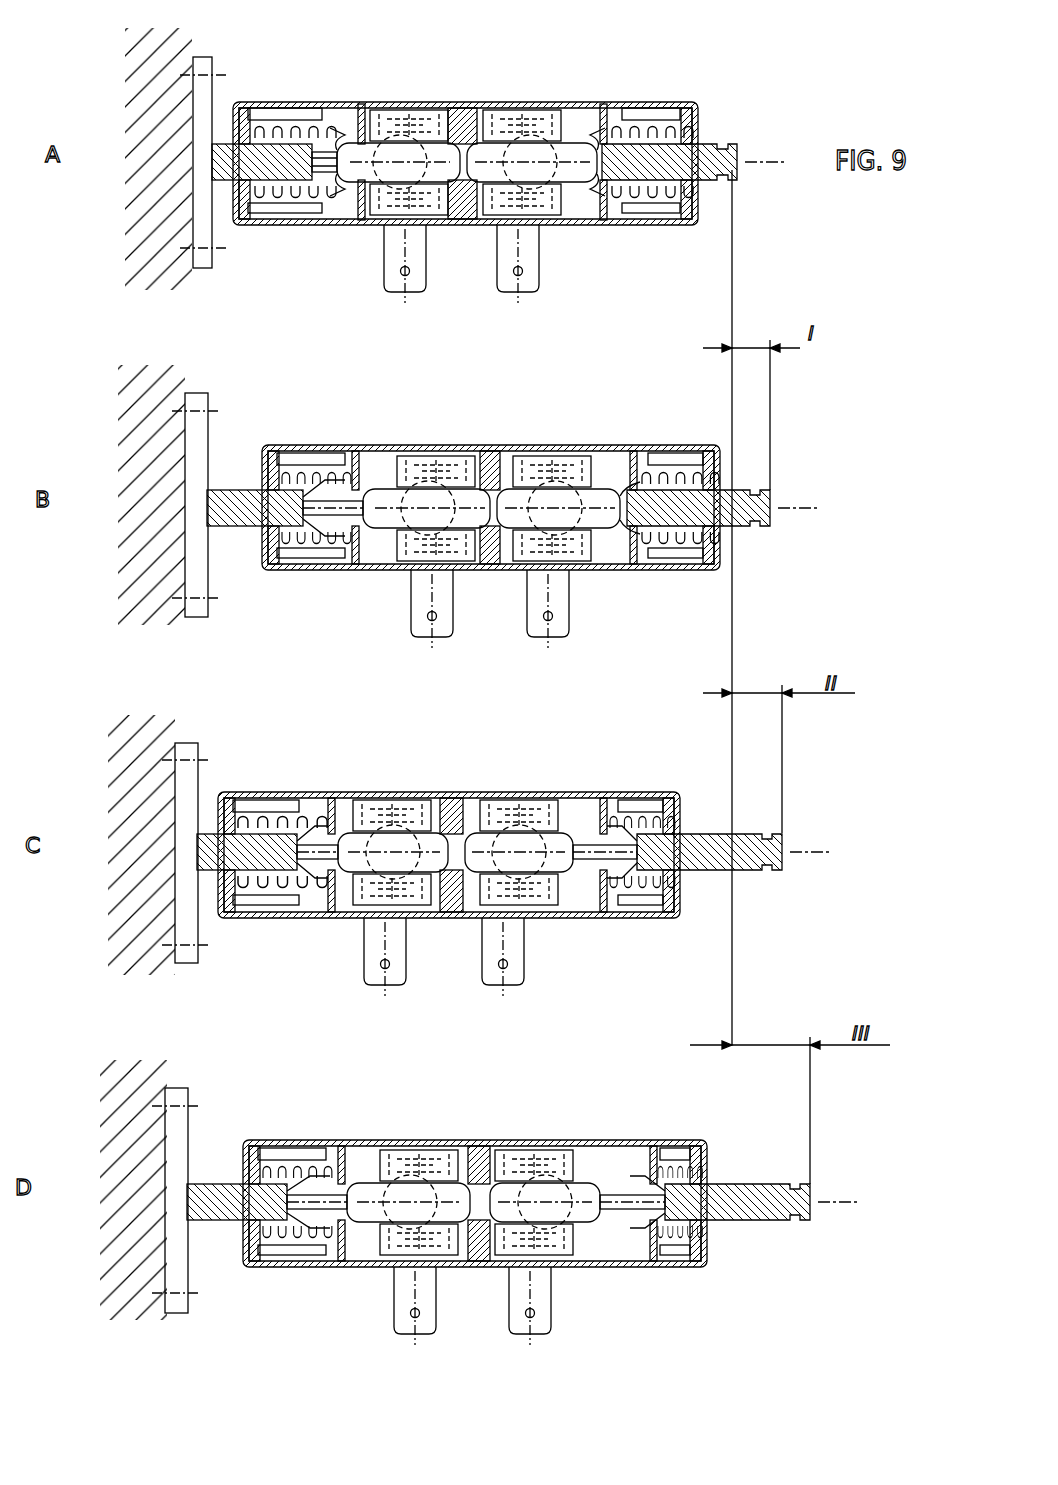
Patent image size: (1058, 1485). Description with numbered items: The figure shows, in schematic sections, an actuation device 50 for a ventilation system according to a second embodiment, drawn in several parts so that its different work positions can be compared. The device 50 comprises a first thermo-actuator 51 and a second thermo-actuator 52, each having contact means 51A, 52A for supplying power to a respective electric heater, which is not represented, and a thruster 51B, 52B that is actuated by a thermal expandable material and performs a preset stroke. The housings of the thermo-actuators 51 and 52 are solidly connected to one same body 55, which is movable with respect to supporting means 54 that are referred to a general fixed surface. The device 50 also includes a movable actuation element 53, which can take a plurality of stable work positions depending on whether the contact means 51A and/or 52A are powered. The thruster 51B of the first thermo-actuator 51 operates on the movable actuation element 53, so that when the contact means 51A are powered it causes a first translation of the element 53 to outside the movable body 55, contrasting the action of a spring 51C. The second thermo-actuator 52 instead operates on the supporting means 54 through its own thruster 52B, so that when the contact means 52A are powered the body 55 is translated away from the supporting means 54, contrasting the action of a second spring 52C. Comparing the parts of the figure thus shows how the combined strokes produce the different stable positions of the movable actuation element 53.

The actuation device 50 is at (703, 78).
The first thermo-actuator 51 is at (458, 106).
The contact means 51A is at (408, 292).
The thruster 51B is at (338, 135).
The spring 51C is at (292, 130).
The second thermo-actuator 52 is at (478, 108).
The contact means 52A is at (535, 292).
The thruster 52B is at (606, 140).
The second spring 52C is at (655, 215).
The movable actuation element 53 is at (720, 143).
The supporting means 54 is at (215, 183).
The body 55 is at (600, 226).